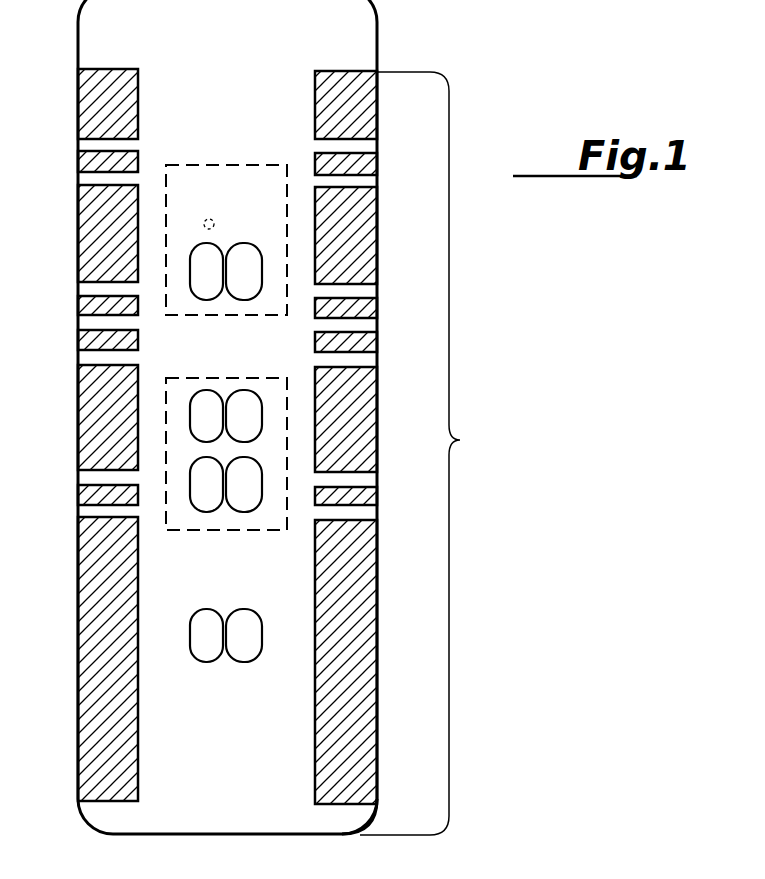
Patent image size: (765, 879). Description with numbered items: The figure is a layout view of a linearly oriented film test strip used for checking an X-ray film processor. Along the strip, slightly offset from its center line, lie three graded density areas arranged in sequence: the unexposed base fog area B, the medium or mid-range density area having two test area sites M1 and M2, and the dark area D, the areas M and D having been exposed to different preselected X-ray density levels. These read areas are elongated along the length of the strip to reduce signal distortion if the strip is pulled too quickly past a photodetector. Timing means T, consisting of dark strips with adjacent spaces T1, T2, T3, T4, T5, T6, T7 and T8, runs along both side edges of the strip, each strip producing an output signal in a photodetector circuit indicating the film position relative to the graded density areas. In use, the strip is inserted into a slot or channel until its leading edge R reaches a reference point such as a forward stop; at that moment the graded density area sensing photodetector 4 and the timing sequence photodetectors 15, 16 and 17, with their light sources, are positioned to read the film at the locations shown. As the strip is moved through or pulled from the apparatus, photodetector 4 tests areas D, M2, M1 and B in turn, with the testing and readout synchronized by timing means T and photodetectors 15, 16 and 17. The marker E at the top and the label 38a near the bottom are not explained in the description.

The timing sequence photodetector 17 is at (98, 108).
The timing sequence photodetector 16 is at (98, 356).
The timing sequence photodetector 15 is at (98, 786).
The graded density area sensing photodetector 4 is at (215, 219).
The dark area D is at (207, 284).
The mid-range density test area site M2 is at (211, 400).
The mid-range density test area site M1 is at (206, 500).
The base fog area B is at (208, 648).
The timing strip T1 is at (365, 148).
The timing strip T2 is at (365, 180).
The timing strip T3 is at (365, 292).
The timing strip T4 is at (363, 327).
The timing strip T5 is at (365, 360).
The timing strip T6 is at (365, 481).
The timing strip T7 is at (365, 513).
The timing strip T8 is at (352, 815).
The timing means T is at (419, 453).
The leading edge R is at (236, 834).
The card top edge marker E is at (246, 22).
The reference element 38a is at (468, 878).